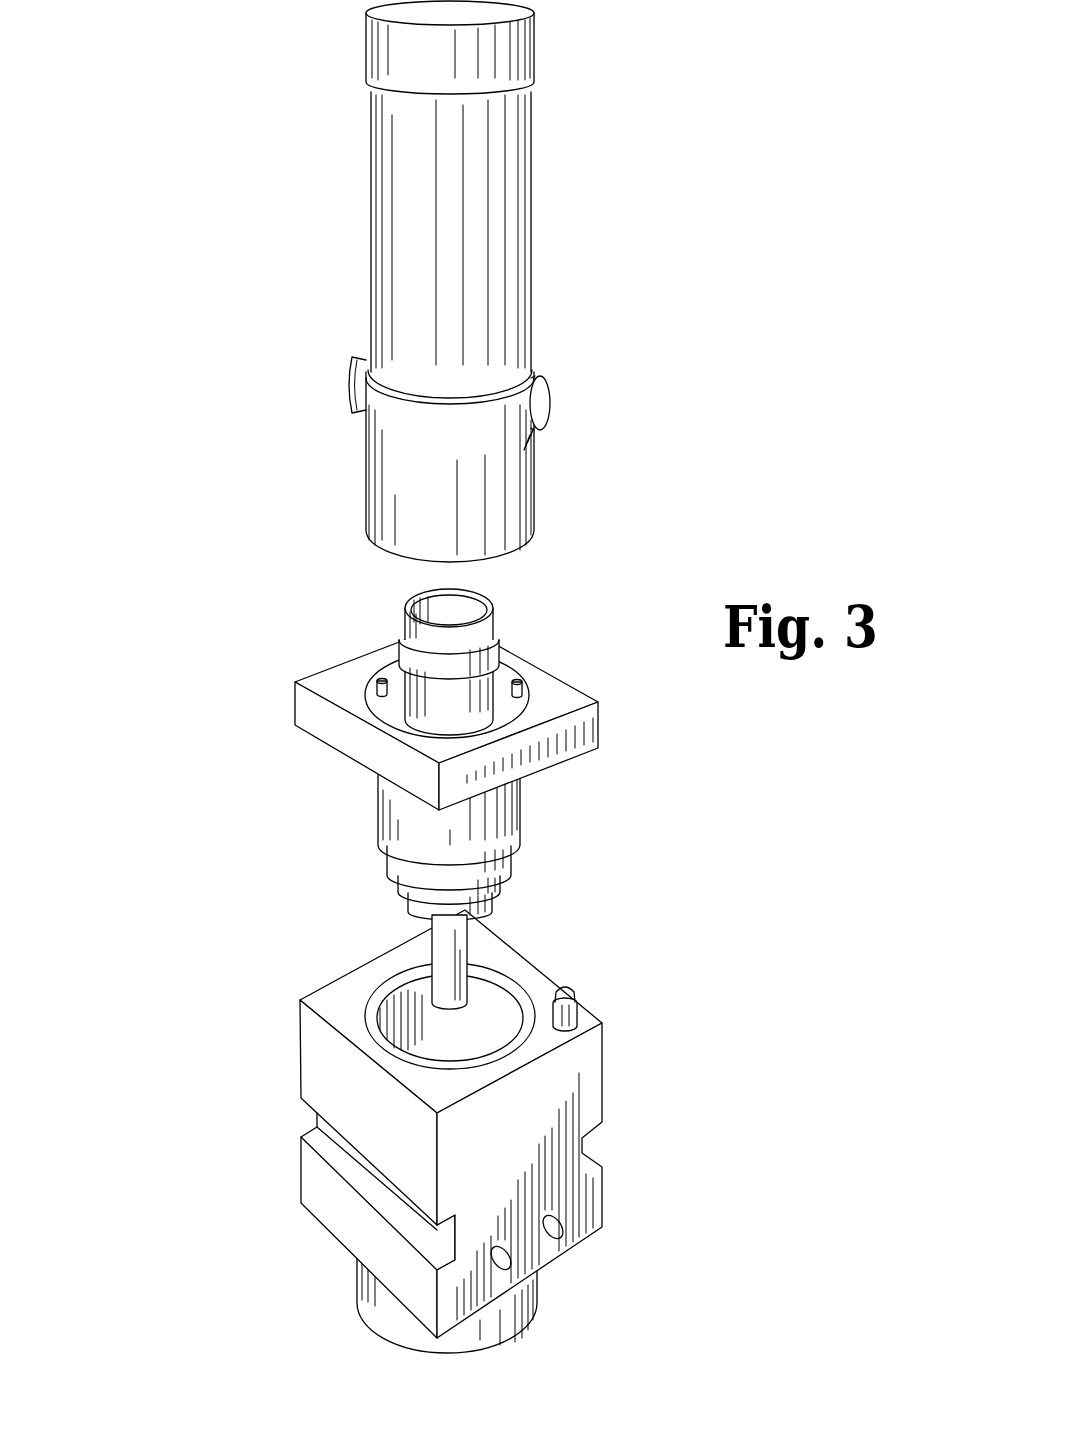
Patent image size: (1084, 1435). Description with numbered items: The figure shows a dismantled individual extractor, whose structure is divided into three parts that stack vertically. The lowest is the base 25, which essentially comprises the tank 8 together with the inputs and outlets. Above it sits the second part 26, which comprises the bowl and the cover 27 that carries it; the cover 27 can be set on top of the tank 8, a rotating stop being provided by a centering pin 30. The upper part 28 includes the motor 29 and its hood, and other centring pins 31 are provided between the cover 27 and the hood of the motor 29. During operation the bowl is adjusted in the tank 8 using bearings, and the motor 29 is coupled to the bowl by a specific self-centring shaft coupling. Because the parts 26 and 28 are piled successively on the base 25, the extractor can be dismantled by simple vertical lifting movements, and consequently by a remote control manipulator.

The tank 8 is at (577, 1093).
The base 25 is at (505, 1124).
The second part 26 is at (625, 707).
The cover 27 is at (580, 748).
The upper part 28 is at (590, 277).
The motor 29 is at (318, 796).
The centering pin 30 is at (575, 992).
The centring pins 31 is at (377, 681).